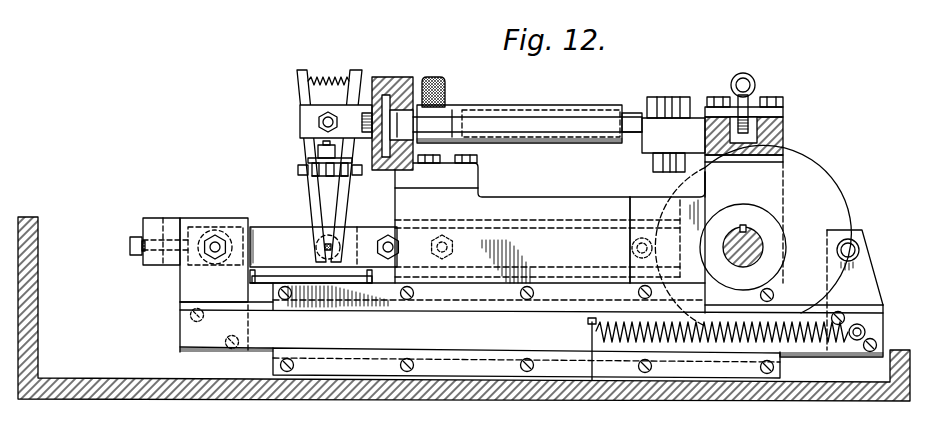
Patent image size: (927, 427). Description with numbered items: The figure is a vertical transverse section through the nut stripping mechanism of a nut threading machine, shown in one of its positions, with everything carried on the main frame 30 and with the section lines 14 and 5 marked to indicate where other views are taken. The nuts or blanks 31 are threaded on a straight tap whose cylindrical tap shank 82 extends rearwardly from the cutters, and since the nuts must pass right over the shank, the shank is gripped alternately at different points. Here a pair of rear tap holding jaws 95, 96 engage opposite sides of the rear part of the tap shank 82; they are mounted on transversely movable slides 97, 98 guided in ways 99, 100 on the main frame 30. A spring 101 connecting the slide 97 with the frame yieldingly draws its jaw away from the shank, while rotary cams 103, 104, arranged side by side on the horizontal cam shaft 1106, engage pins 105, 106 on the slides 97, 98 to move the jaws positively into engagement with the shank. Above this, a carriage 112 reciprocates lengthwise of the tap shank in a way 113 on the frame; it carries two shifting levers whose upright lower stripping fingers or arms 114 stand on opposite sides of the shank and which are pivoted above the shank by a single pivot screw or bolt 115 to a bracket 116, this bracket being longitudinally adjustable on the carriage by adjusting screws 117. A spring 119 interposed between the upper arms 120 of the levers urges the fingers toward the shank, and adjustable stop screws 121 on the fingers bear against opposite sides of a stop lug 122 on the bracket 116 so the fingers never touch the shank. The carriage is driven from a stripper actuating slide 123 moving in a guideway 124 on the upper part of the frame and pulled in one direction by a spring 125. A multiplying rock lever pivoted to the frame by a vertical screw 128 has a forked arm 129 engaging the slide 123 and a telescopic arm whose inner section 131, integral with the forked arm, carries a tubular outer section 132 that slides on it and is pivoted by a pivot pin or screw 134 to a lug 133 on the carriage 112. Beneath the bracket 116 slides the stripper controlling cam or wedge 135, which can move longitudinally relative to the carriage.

The main frame 30 is at (150, 397).
The section line 14- 14 is at (216, 218).
The section line 5- 5 is at (290, 123).
The nuts or blanks 31 is at (328, 259).
The tap shank 82 is at (353, 230).
The rear tap holding jaw 95 is at (323, 247).
The rear tap holding jaw 96 is at (377, 247).
The transversely movable slide 97 is at (531, 329).
The transversely movable slide 98 is at (533, 230).
The way 99 is at (440, 352).
The way 100 is at (593, 228).
The spring 101 is at (690, 320).
The rotary cam 103 is at (802, 192).
The rotary cam 104 is at (702, 170).
The pin 105 is at (848, 239).
The pin 106 is at (632, 242).
The carriage 112 is at (400, 165).
The way 113 is at (387, 93).
The stripping fingers or arms 114 is at (320, 211).
The pivot screw or bolt 115 is at (320, 122).
The bracket 116 is at (303, 130).
The adjusting screws 117 is at (364, 113).
The spring 119 is at (323, 77).
The upper arms 120 is at (303, 70).
The adjustable stop screws 121 is at (318, 177).
The stop lug 122 is at (328, 178).
The stripper actuating slide 123 is at (783, 123).
The guideway 124 is at (783, 147).
The spring 125 is at (754, 85).
The vertical screw 128 is at (667, 100).
The forked arm 129 is at (700, 123).
The inner section 131 is at (627, 115).
The tubular outer section 132 is at (575, 115).
The lug 133 is at (442, 120).
The pivot pin or screw 134 is at (433, 77).
The stripper controlling cam or wedge 135 is at (318, 153).
The cam shaft 1106 is at (745, 230).